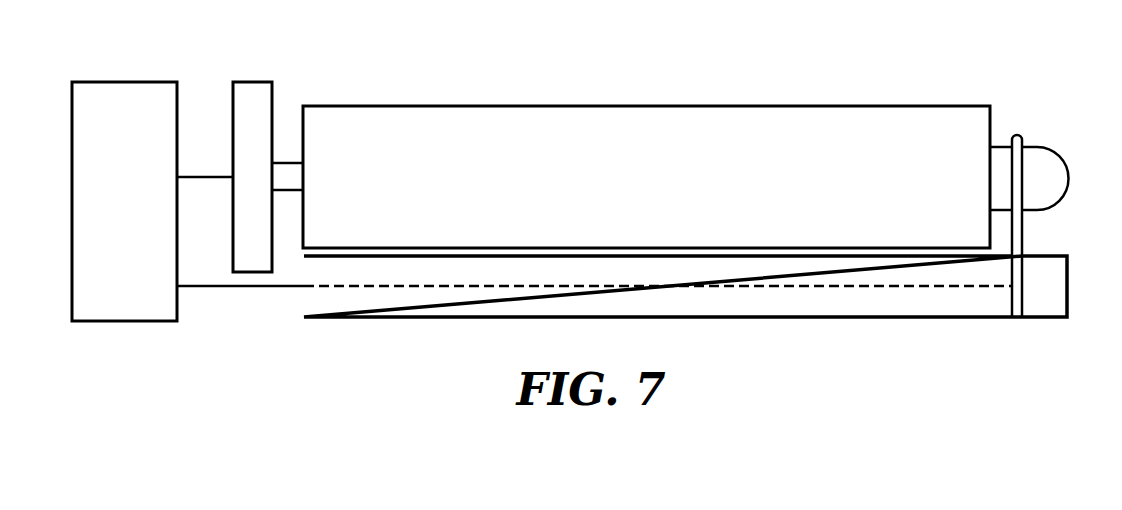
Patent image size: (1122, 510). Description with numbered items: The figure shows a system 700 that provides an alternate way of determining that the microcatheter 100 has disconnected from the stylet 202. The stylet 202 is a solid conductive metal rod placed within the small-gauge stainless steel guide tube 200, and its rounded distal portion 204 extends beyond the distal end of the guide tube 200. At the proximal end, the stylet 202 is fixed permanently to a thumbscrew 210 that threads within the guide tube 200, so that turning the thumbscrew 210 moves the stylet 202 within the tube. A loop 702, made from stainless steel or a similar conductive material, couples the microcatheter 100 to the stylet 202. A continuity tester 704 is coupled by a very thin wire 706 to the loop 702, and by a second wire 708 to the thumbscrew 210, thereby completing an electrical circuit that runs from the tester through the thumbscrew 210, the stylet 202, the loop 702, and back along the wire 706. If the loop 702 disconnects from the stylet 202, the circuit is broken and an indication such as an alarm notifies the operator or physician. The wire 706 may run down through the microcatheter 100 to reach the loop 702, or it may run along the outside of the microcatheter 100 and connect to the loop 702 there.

The system 700 is at (817, 60).
The continuity tester 704 is at (124, 201).
The second wire 708 is at (203, 177).
The very thin wire 706 is at (277, 287).
The thumbscrew 210 is at (255, 103).
The guide tube 200 is at (708, 105).
The microcatheter 100 is at (685, 286).
The stylet 202 is at (1005, 145).
The loop 702 is at (1017, 225).
The rounded distal portion 204 is at (1050, 158).